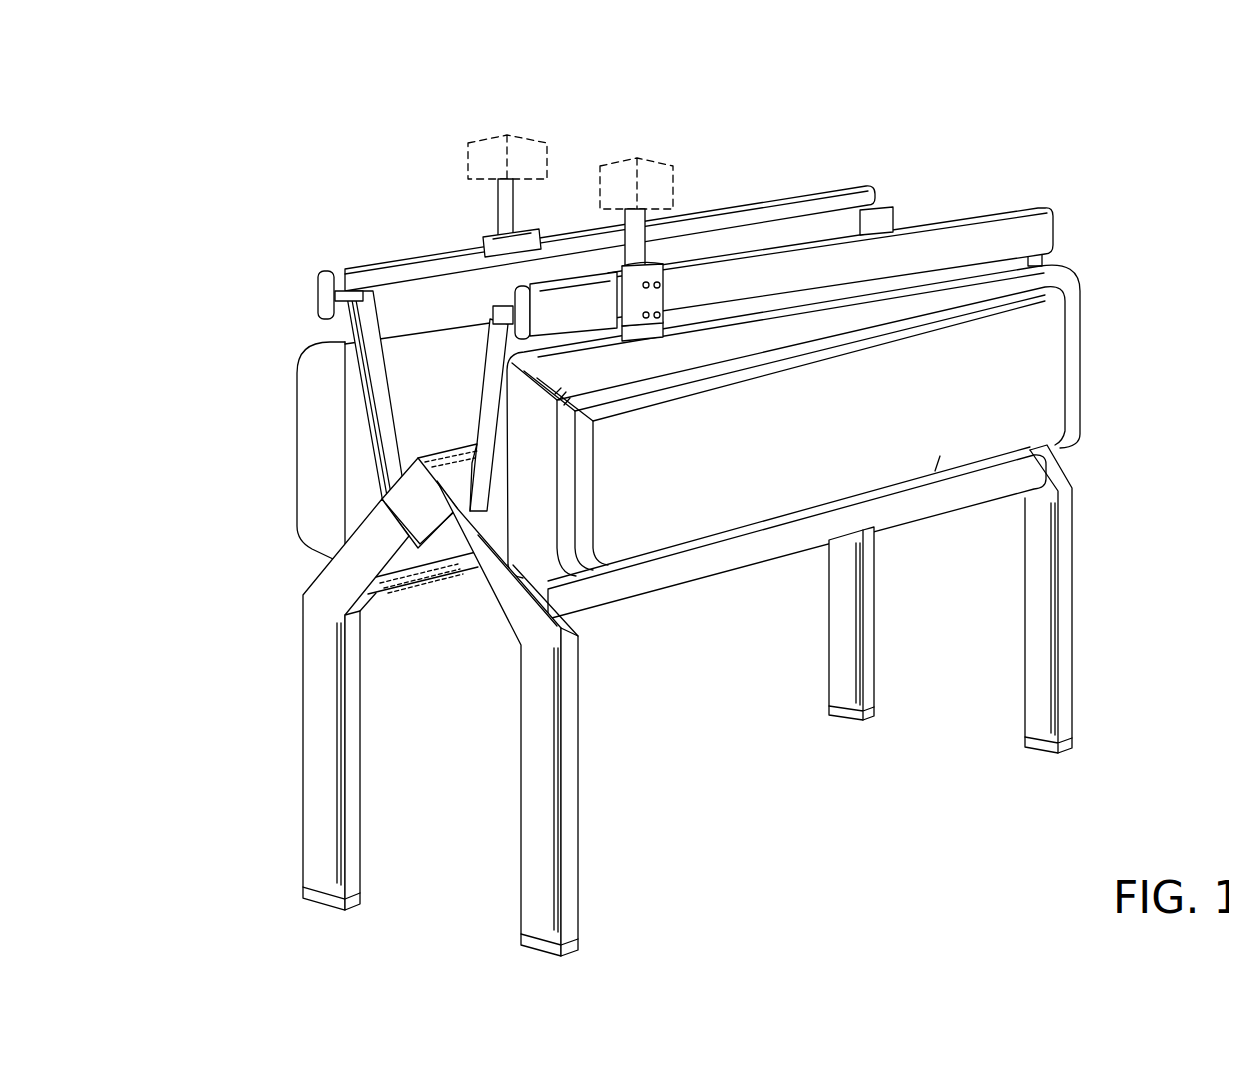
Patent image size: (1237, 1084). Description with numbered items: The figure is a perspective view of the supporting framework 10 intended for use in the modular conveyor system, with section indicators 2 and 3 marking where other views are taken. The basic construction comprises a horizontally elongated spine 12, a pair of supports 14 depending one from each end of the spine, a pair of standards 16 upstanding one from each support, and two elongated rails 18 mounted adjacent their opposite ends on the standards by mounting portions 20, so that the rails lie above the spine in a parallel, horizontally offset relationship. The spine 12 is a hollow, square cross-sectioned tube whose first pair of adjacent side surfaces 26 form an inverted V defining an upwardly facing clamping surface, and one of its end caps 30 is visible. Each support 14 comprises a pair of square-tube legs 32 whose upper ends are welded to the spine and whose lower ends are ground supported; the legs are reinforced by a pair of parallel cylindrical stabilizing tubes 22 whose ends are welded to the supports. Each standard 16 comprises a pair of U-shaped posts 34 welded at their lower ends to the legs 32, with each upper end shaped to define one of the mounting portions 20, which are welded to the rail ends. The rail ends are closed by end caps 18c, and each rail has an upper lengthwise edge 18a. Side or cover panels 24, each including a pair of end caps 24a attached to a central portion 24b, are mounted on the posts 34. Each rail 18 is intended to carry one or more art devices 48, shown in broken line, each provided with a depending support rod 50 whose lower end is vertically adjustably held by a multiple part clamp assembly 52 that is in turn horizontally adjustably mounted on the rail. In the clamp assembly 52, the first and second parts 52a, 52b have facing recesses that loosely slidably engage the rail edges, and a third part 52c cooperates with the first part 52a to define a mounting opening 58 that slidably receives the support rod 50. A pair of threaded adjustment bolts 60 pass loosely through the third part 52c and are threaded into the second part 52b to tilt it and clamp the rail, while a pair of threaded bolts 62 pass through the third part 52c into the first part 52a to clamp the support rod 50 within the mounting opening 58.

The supporting framework 10 is at (290, 233).
The spine 12 is at (429, 438).
The support 14 is at (270, 661).
The standard 16 is at (275, 327).
The rail 18 is at (760, 245).
The upper lengthwise extending edge 18a is at (792, 186).
The end cap 18c is at (310, 283).
The mounting portion 20 is at (338, 283).
The reinforcing or stabilizing tube 22 is at (675, 583).
The side or cover panel 24 is at (285, 481).
The end cap 24a is at (302, 410).
The central portion 24b is at (920, 453).
The side surface 26 is at (468, 481).
The end cap 30 is at (430, 505).
The leg 32 is at (295, 823).
The post 34 is at (349, 496).
The art device 48 is at (458, 151).
The support rod 50 is at (489, 206).
The clamp assembly 52 is at (654, 305).
The first part 52a is at (573, 304).
The second part 52b is at (624, 329).
The third part 52c is at (654, 325).
The mounting opening 58 is at (658, 261).
The threaded adjustment bolt 60 is at (647, 311).
The threaded bolt 62 is at (672, 295).
The section line 2 is at (1009, 190).
The section line 3 is at (615, 246).